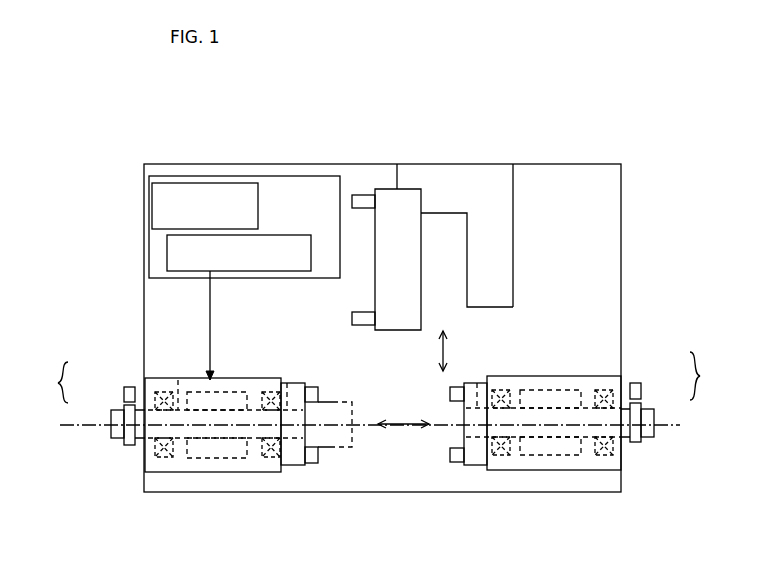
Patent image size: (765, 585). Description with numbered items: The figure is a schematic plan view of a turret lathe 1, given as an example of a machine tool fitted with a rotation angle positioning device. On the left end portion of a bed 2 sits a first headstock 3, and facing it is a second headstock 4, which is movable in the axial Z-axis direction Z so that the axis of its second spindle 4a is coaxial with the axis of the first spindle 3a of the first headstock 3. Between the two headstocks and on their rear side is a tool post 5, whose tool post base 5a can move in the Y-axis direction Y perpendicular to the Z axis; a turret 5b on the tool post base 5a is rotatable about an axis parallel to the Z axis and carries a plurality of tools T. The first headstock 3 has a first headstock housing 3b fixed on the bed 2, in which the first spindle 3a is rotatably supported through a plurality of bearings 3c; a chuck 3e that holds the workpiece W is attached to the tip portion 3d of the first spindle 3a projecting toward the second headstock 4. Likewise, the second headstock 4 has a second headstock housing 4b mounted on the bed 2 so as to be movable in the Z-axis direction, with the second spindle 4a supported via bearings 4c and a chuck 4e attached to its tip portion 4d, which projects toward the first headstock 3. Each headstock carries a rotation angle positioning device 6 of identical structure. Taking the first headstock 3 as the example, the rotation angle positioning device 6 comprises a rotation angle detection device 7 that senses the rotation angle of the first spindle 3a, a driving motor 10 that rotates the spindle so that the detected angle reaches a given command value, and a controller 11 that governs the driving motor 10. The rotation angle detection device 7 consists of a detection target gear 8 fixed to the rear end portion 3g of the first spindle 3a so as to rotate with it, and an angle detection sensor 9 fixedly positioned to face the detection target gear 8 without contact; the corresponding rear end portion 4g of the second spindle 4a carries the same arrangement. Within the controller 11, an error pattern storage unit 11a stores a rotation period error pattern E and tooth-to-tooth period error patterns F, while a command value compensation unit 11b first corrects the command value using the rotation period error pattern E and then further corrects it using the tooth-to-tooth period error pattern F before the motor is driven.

The turret lathe 1 is at (468, 117).
The bed 2 is at (573, 176).
The first headstock 3 is at (163, 366).
The first spindle 3a is at (180, 379).
The first headstock housing 3b is at (246, 377).
The bearings 3c is at (166, 388).
The tip portion 3d is at (289, 382).
The chuck 3e is at (300, 383).
The rear end portion 3g is at (117, 439).
The second headstock 4 is at (616, 368).
The second spindle 4a is at (585, 389).
The second headstock housing 4b is at (527, 376).
The bearings 4c is at (502, 388).
The tip portion 4d is at (479, 383).
The chuck 4e is at (468, 373).
The rear end portion 4g is at (647, 440).
The tool post 5 is at (520, 184).
The tool post base 5a is at (503, 237).
The turret 5b is at (383, 189).
The rotation angle positioning device 6 is at (214, 480).
The rotation angle detection device 7 is at (377, 377).
The detection target gear 8 is at (113, 420).
The angle detection sensor 9 is at (124, 392).
The driving motor 10 is at (230, 389).
The controller 11 is at (246, 175).
The error pattern storage unit 11a is at (151, 206).
The command value compensation unit 11b is at (167, 249).
The rotation period error pattern E is at (181, 173).
The tooth-to-tooth period error pattern F is at (211, 173).
The tools T is at (352, 200).
The workpiece W is at (335, 401).
The Y-axis direction Y is at (441, 350).
The Z-axis direction Z is at (405, 432).